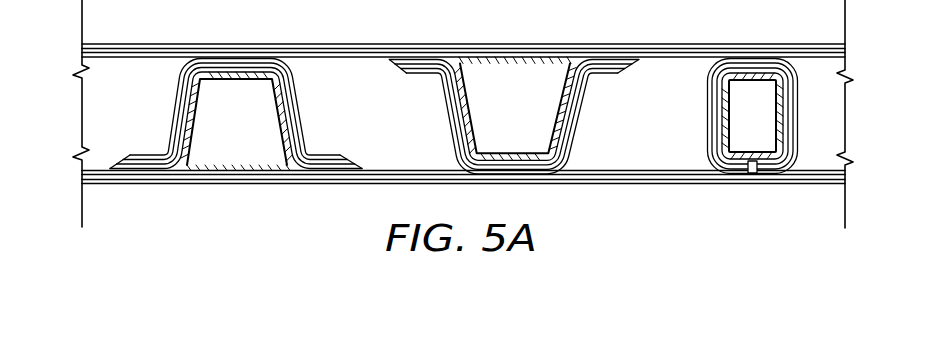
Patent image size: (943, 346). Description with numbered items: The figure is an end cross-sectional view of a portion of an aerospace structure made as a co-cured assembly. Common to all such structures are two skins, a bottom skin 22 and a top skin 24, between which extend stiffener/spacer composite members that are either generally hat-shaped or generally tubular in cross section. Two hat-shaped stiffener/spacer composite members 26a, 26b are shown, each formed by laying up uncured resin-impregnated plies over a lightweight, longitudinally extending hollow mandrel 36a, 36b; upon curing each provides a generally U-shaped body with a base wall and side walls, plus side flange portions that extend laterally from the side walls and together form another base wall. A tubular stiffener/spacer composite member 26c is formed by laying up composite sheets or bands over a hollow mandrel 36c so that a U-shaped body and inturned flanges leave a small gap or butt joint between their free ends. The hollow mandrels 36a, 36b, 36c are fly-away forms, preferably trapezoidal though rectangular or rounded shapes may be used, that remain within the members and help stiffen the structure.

The skin 22 is at (222, 187).
The skin 24 is at (668, 46).
The hat-shaped stiffener/spacer composite member 26a is at (302, 98).
The hat-shaped stiffener/spacer composite member 26b is at (446, 126).
The tubular stiffener/spacer composite member 26c is at (705, 102).
The hollow mandrel 36a is at (192, 126).
The hollow mandrel 36b is at (468, 104).
The hollow mandrel 36c is at (726, 135).